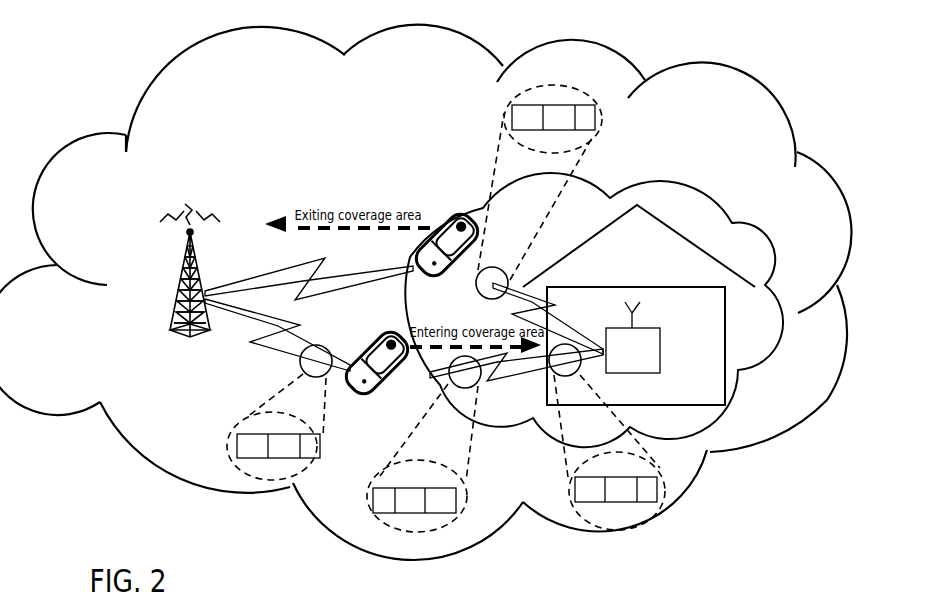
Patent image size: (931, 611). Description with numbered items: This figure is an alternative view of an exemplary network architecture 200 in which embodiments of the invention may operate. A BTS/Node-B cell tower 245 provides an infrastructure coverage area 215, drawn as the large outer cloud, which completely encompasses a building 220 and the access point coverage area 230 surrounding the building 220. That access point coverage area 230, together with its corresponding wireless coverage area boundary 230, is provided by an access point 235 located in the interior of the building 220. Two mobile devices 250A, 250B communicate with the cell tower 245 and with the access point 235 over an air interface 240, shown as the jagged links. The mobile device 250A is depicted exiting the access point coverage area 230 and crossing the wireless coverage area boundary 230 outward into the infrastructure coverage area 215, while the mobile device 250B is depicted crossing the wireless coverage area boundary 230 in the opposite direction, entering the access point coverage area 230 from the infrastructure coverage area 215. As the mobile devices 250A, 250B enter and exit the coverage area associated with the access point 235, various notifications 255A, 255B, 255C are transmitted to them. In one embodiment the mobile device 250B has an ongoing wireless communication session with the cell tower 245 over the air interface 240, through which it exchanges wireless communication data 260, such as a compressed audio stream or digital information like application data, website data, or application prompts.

The network architecture 200 is at (250, 545).
The infrastructure coverage area 215 is at (162, 477).
The building 220 is at (649, 255).
The access point coverage area and wireless coverage area boundary 230 is at (769, 390).
The access point 235 is at (622, 360).
The air interface 240 is at (258, 265).
The BTS/Node-B cell tower 245 is at (203, 395).
The mobile device 250A is at (430, 300).
The mobile device 250B is at (348, 420).
The notification 255A is at (400, 485).
The notification 255B is at (537, 150).
The notification 255C is at (597, 471).
The wireless communication data 260 is at (265, 476).